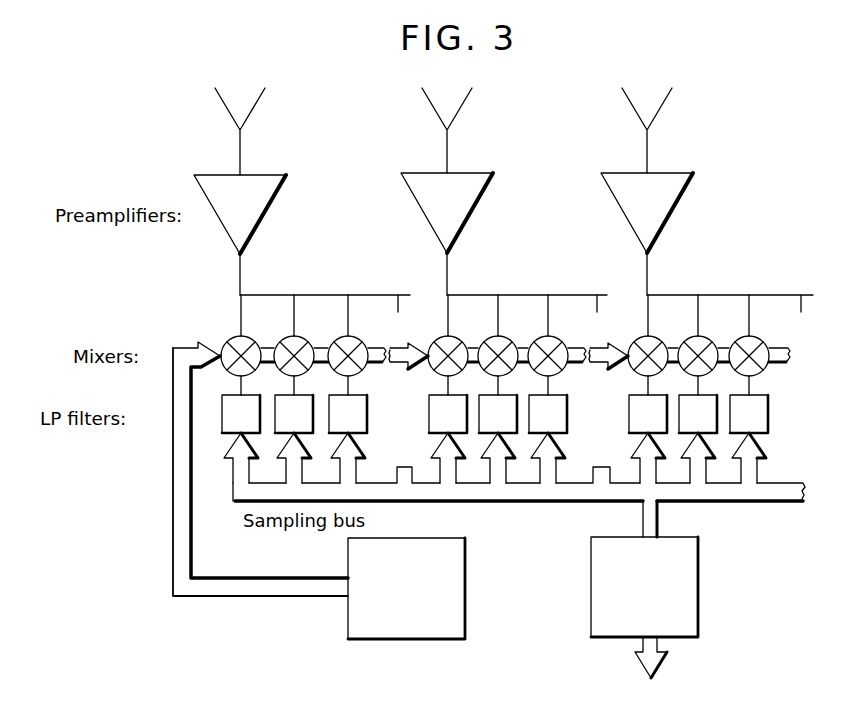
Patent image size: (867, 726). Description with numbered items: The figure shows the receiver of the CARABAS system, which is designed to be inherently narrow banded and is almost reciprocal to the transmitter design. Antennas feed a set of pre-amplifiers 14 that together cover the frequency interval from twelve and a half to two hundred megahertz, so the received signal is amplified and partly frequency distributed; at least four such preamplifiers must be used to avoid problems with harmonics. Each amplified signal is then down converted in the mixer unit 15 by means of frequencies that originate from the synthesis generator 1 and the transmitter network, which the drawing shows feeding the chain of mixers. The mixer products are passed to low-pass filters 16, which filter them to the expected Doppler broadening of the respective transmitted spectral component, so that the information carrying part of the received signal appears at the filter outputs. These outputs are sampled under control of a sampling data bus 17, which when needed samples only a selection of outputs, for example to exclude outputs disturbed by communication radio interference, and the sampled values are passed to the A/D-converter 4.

The synthesis generator 1 is at (465, 590).
The A/D-converter 4 is at (698, 591).
The pre-amplifiers 14 is at (270, 212).
The mixer unit 15 is at (251, 338).
The low-pass filters 16 is at (222, 421).
The data bus 17 is at (527, 504).